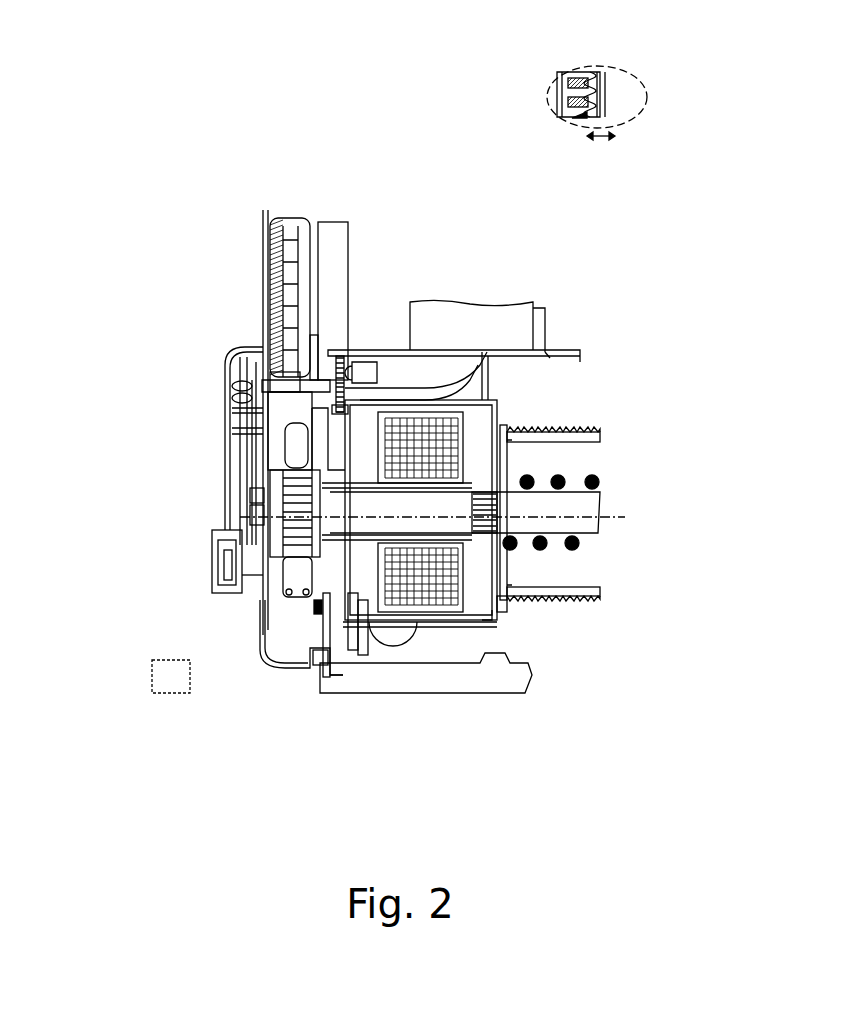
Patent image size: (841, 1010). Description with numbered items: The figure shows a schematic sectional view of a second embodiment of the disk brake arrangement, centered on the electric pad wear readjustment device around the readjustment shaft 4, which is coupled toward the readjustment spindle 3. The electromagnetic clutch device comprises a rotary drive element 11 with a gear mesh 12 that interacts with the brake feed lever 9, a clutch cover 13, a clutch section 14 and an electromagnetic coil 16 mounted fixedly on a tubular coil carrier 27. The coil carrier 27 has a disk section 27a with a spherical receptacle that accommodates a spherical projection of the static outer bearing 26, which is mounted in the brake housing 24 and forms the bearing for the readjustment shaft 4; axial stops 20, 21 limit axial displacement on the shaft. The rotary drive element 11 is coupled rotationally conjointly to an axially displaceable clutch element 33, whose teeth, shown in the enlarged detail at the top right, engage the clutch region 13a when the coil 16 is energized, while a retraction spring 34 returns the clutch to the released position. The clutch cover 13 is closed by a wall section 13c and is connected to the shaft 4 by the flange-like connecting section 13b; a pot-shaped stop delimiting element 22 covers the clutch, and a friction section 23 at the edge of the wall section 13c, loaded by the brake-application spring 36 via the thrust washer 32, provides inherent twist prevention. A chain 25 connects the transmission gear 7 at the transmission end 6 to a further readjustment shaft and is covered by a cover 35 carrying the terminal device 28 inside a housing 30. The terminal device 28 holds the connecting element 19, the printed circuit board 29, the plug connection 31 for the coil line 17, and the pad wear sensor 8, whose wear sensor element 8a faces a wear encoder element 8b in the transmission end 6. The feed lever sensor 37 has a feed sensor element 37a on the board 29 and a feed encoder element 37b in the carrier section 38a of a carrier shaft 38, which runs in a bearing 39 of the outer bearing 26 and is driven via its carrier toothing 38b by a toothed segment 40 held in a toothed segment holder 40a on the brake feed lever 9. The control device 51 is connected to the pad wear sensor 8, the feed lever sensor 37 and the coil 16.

The readjustment spindle 3 is at (590, 583).
The readjustment shaft 4 is at (602, 515).
The transmission end 6 is at (300, 495).
The transmission gear 7 is at (297, 585).
The pad wear sensor 8 is at (118, 472).
The wear sensor element 8a is at (277, 513).
The wear encoder element 8b is at (265, 495).
The brake feed lever 9 is at (412, 367).
The rotary drive element 11 is at (330, 675).
The gear mesh 12 is at (392, 347).
The clutch cover 13 is at (463, 417).
The clutch region 13a is at (618, 97).
The flange-like connecting section 13b is at (495, 405).
The wall section 13c is at (500, 614).
The clutch section 14 is at (640, 53).
The electromagnetic coil 16 is at (500, 403).
The line 17 is at (310, 442).
The connecting element 19 is at (225, 533).
The axial stop 20 is at (287, 537).
The axial stop 21 is at (492, 515).
The stop delimiting element 22 is at (455, 628).
The friction section 23 is at (505, 605).
The brake housing 24 is at (510, 685).
The chain 25 is at (273, 232).
The outer bearing 26 is at (317, 627).
The coil carrier 27 is at (482, 621).
The disk section 27a is at (362, 605).
The terminal device 28 is at (235, 302).
The printed circuit board 29 is at (235, 410).
The housing 30 is at (240, 430).
The plug connection 31 is at (118, 383).
The thrust washer 32 is at (507, 477).
The clutch element 33 is at (590, 80).
The retraction spring 34 is at (557, 118).
The cover 35 is at (263, 645).
The brake-application spring 36 is at (590, 477).
The feed lever sensor 37 is at (120, 353).
The feed sensor element 37a is at (232, 390).
The feed encoder element 37b is at (285, 392).
The carrier shaft 38 is at (275, 372).
The carrier section 38a is at (283, 367).
The carrier toothing 38b is at (367, 358).
The bearing 39 is at (300, 377).
The toothed segment 40 is at (338, 356).
The toothed segment holder 40a is at (403, 302).
The control device 51 is at (156, 690).